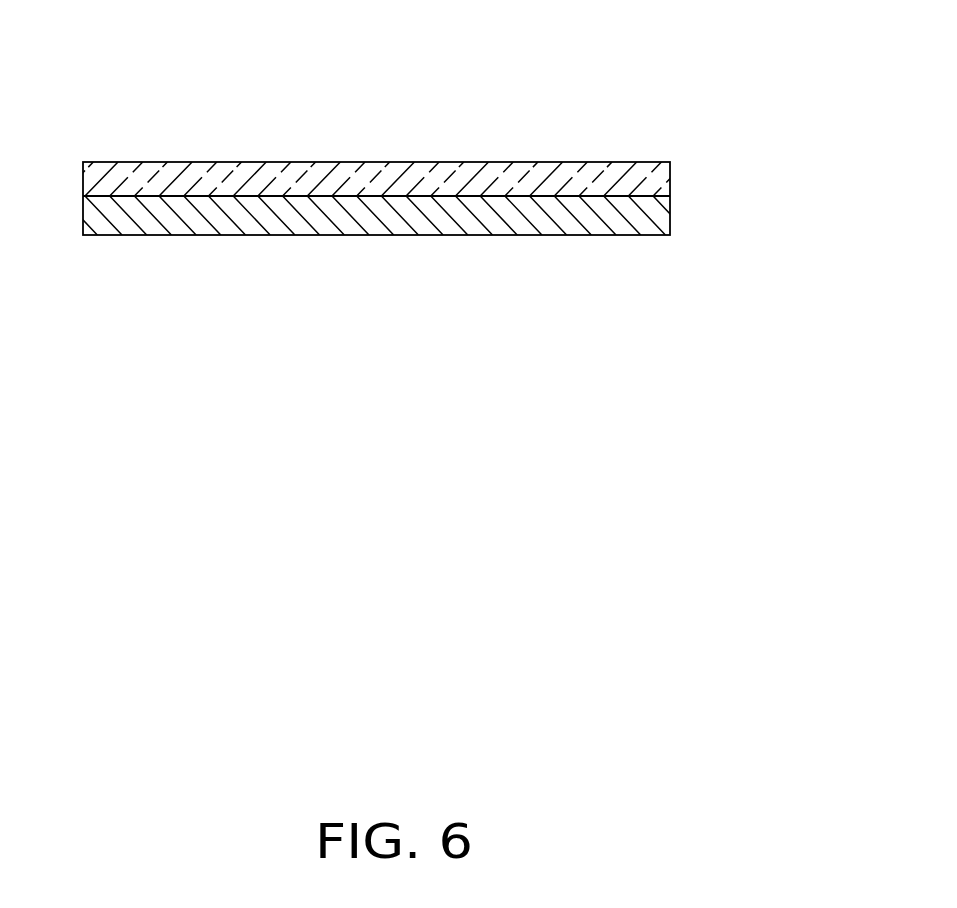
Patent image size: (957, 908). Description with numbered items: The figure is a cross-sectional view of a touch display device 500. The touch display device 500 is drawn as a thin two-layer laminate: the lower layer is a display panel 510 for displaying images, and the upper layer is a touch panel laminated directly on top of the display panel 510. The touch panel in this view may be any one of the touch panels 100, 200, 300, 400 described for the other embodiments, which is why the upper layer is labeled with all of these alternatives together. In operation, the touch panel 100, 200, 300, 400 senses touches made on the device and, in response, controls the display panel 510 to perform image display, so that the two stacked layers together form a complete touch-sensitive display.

The touch display device 500 is at (348, 87).
The touch panel 100 is at (558, 177).
The touch panel 200 is at (373, 179).
The touch panel 300 is at (373, 179).
The touch panel 400 is at (373, 179).
The display panel 510 is at (640, 220).